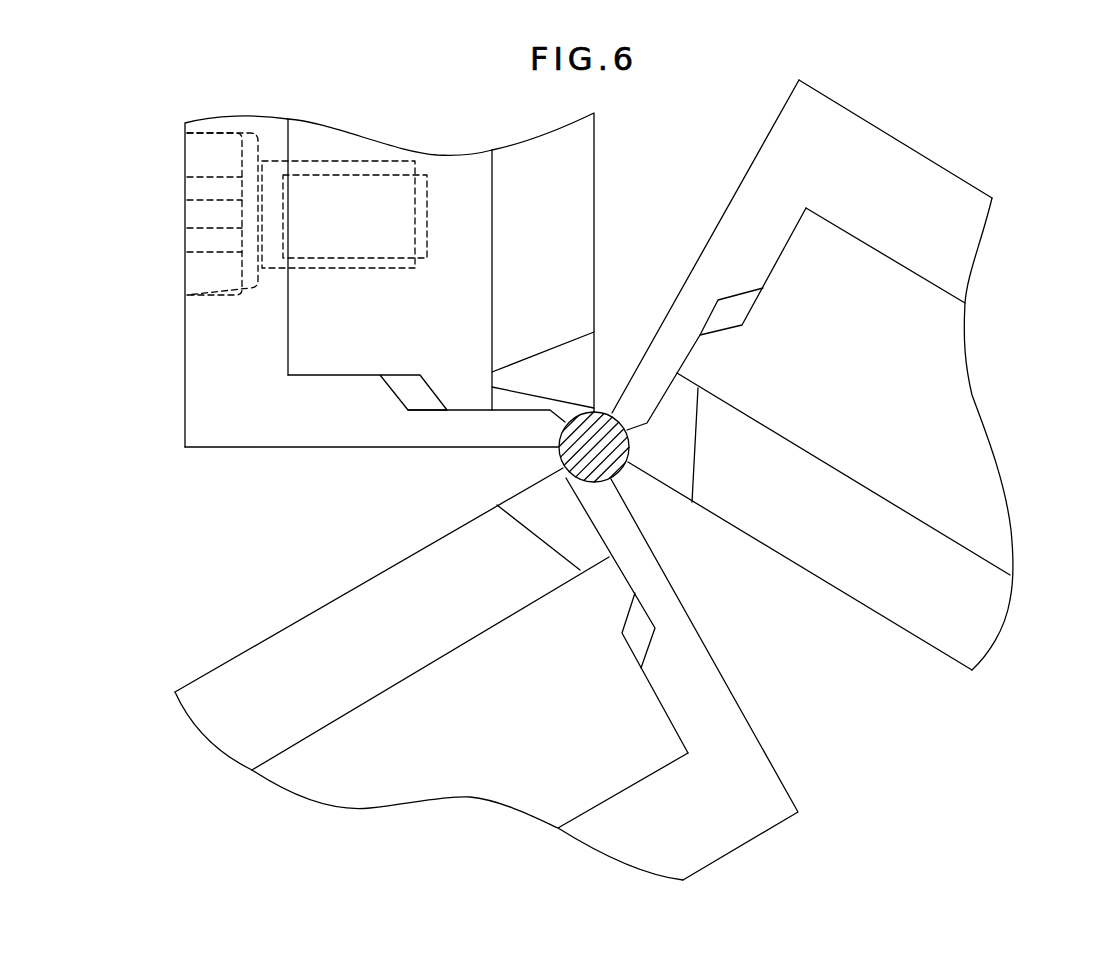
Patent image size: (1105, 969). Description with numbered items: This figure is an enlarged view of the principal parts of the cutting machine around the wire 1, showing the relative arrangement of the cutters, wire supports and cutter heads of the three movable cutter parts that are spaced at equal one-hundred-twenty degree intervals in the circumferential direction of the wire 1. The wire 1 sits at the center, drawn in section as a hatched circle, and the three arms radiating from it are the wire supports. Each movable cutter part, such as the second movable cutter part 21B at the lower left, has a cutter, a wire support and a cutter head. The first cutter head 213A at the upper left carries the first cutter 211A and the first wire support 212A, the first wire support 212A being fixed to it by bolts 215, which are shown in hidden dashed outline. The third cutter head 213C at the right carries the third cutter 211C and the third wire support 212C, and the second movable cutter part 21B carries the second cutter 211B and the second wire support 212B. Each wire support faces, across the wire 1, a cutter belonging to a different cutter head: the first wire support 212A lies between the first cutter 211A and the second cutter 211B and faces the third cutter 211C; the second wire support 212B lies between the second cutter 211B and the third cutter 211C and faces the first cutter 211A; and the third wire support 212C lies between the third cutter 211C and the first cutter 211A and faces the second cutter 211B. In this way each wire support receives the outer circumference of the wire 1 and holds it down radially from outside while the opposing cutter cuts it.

The wire 1 is at (563, 455).
The first wire support 212A is at (315, 413).
The first cutter head 213A is at (452, 197).
The first cutter 211A is at (560, 192).
The bolts 215 is at (185, 225).
The third wire support 212C is at (752, 233).
The third cutter head 213C is at (913, 390).
The third cutter 211C is at (775, 512).
The second wire support 212B is at (687, 688).
The second cutter 211B is at (297, 660).
The second movable cutter part 21B is at (488, 768).